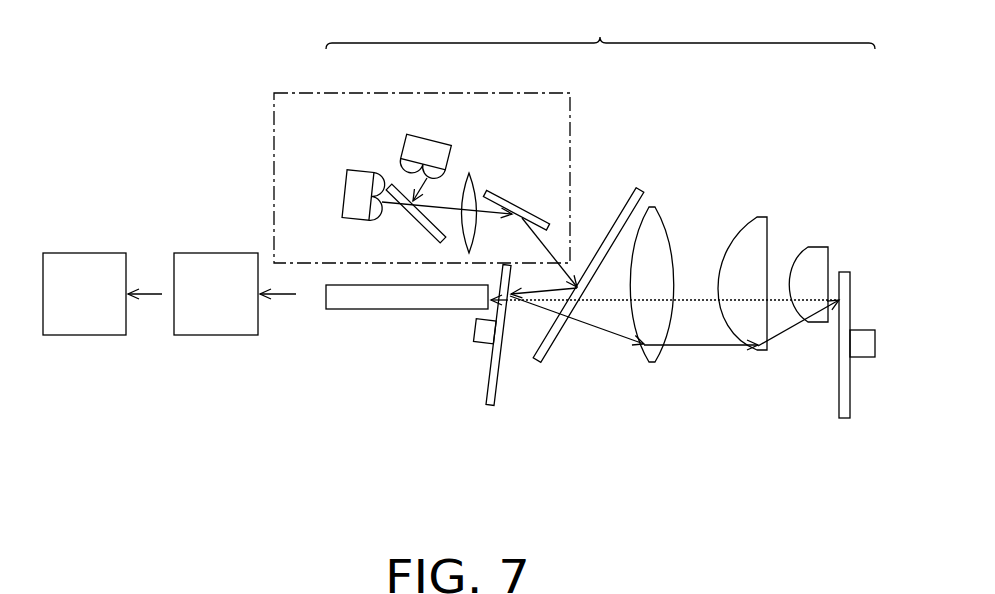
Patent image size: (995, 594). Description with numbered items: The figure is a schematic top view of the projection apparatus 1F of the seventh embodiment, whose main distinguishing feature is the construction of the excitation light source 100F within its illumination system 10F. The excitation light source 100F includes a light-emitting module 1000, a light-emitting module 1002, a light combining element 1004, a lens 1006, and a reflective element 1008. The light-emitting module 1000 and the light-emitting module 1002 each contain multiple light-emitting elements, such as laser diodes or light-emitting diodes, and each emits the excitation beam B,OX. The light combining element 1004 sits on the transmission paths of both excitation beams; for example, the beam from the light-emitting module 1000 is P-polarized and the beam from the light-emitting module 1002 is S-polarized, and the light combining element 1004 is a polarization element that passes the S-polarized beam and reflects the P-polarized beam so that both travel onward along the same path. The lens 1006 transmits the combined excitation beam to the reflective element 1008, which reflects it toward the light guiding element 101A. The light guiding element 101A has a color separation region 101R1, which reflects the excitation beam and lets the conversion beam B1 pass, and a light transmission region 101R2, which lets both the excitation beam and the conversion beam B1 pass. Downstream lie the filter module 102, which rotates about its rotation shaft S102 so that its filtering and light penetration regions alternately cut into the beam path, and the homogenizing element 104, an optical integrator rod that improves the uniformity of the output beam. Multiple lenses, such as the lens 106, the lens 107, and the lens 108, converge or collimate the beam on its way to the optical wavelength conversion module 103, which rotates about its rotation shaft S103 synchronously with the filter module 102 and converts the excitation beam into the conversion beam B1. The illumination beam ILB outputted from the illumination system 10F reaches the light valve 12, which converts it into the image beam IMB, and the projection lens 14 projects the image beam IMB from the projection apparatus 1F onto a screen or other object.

The illumination system 10F is at (600, 28).
The excitation light source 100F is at (274, 160).
The light-emitting module 1000 is at (427, 146).
The light-emitting module 1002 is at (360, 180).
The light combining element 1004 is at (427, 220).
The lens 1006 is at (476, 180).
The reflective element 1008 is at (528, 213).
The excitation beam B,OX is at (542, 237).
The light guiding element 101A is at (645, 188).
The color separation region 101R1 is at (616, 217).
The light transmission region 101R2 is at (544, 338).
The filter module 102 is at (483, 378).
The rotation shaft S102 is at (472, 331).
The homogenizing element 104 is at (357, 302).
The conversion beam B1 is at (698, 296).
The lens 106 is at (654, 206).
The lens 107 is at (762, 217).
The lens 108 is at (815, 257).
The optical wavelength conversion module 103 is at (857, 403).
The rotation shaft S103 is at (865, 338).
The projection lens 14 is at (97, 309).
The light valve 12 is at (230, 309).
The image beam IMB is at (145, 296).
The illumination beam ILB is at (277, 296).
The projection apparatus 1F is at (789, 517).